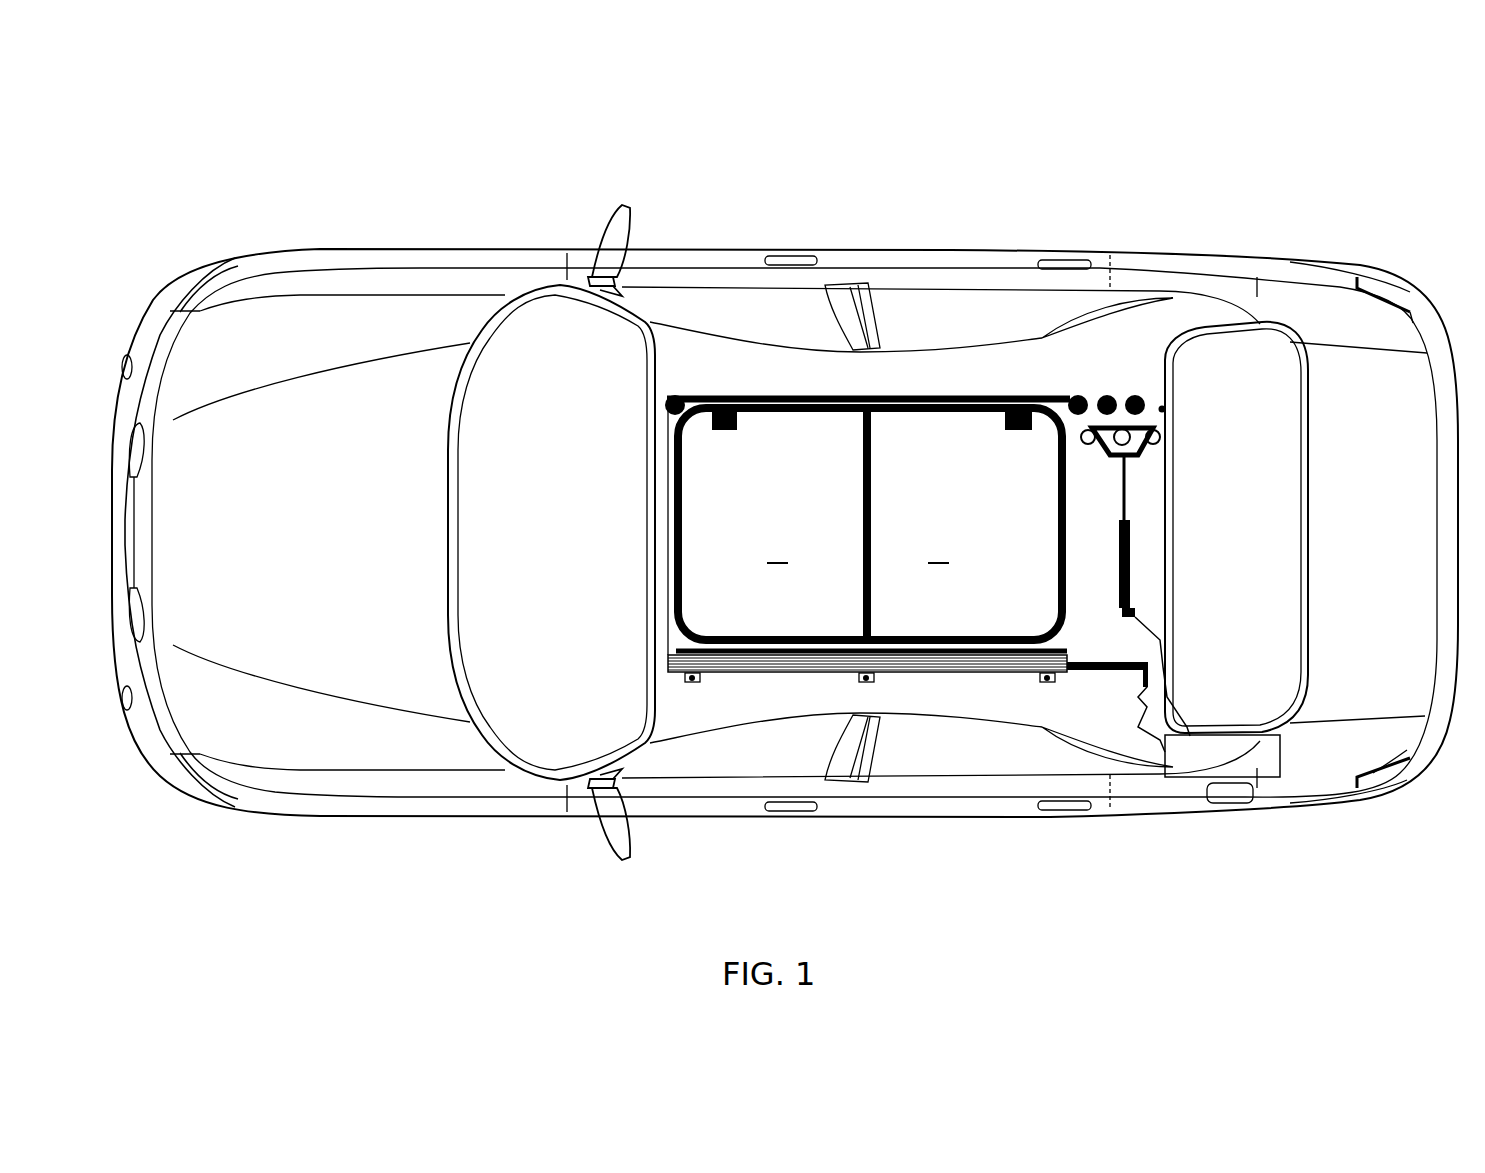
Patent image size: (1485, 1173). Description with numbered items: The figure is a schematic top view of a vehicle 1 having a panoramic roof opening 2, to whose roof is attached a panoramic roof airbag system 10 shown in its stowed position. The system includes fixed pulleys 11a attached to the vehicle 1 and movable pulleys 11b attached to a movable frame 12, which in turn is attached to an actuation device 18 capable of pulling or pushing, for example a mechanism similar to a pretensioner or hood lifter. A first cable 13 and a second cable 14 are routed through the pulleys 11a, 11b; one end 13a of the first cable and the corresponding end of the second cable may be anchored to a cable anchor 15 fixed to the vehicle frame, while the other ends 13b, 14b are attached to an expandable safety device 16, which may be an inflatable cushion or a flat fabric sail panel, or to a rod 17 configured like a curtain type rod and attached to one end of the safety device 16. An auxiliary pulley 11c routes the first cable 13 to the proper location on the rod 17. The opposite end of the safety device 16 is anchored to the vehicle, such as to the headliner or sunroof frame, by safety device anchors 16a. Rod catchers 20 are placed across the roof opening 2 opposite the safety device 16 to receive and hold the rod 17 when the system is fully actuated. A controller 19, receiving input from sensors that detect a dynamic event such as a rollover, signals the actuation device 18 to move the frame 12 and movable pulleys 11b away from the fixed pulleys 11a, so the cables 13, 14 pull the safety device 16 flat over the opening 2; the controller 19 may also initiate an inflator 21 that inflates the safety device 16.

The vehicle 1 is at (253, 202).
The panoramic roof opening 2 is at (858, 547).
The panoramic roof airbag system 10 is at (889, 525).
The fixed pulleys 11a is at (1133, 394).
The movable pulleys 11b is at (1164, 440).
The auxiliary pulley 11c is at (672, 395).
The movable frame 12 is at (1143, 450).
The first cable 13 is at (851, 397).
The end of first cable 13a is at (1160, 384).
The other end of first cable 13b is at (653, 620).
The second cable 14 is at (871, 527).
The other end of second cable 14b is at (1033, 633).
The cable anchor 15 is at (1166, 410).
The expandable safety device 16 is at (682, 665).
The safety device anchors 16a is at (693, 682).
The rod 17 is at (687, 662).
The actuation device 18 is at (1143, 560).
The controller 19 is at (1207, 697).
The rod catchers 20 is at (1000, 430).
The inflator 21 is at (1105, 856).